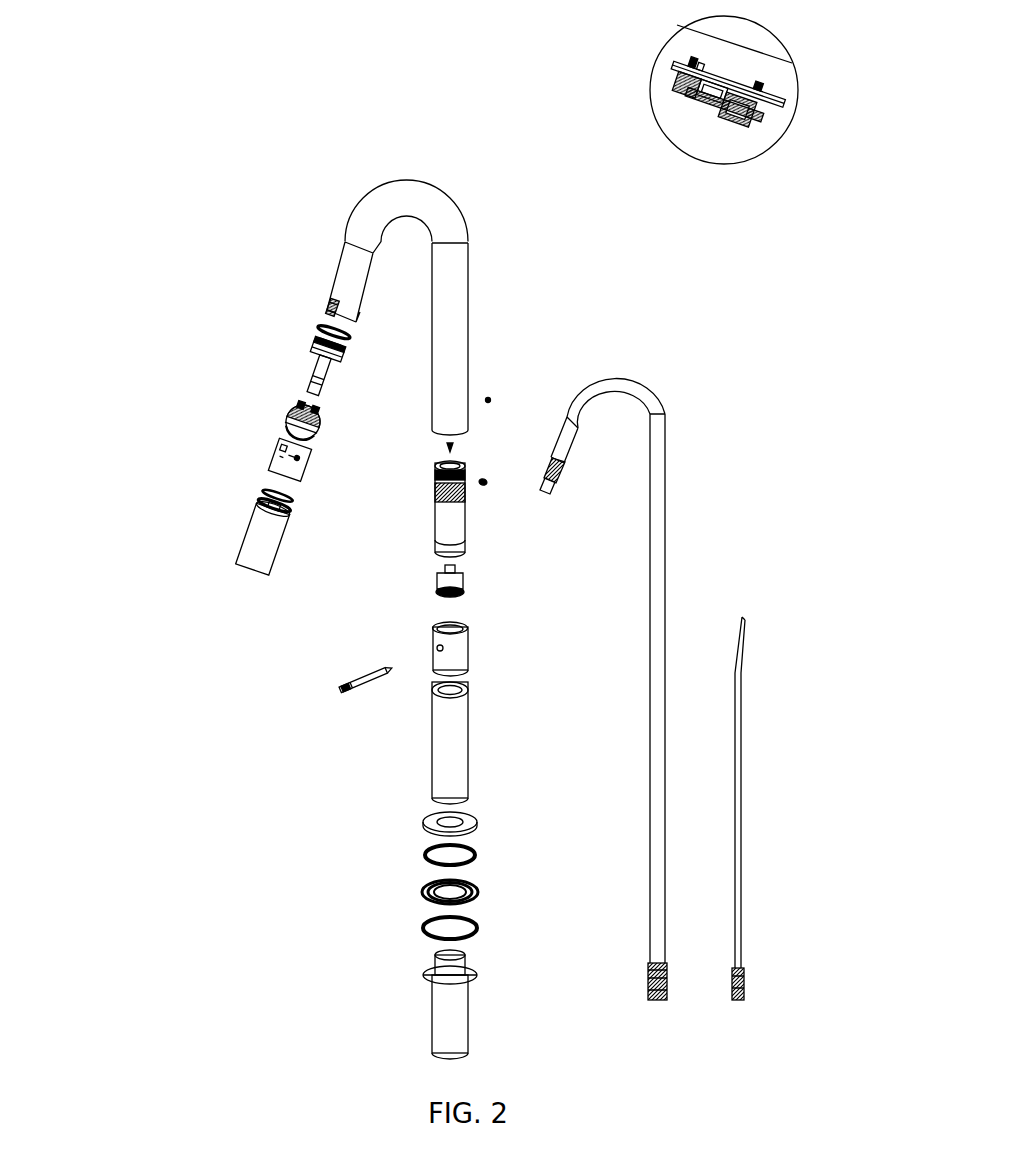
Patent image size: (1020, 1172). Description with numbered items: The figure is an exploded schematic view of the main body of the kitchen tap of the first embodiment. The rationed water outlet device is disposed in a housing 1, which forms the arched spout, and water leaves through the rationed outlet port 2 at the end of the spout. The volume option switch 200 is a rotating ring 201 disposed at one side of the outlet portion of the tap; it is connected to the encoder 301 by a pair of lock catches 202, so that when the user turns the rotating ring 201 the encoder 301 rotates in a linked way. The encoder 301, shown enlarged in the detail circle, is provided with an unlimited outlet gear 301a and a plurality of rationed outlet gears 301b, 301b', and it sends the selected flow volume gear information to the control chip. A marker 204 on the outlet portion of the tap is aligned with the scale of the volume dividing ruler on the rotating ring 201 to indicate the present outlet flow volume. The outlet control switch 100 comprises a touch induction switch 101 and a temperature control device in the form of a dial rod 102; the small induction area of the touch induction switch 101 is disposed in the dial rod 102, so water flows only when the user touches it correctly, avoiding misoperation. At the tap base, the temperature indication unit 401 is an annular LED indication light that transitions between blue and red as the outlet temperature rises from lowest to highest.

The housing 1 is at (445, 357).
The rationed outlet port 2 is at (237, 565).
The outlet control switch 100 is at (294, 641).
The touch induction switch 101 is at (460, 592).
The dial rod 102 is at (340, 687).
The volume option switch 200 is at (217, 455).
The rotating ring 201 is at (270, 463).
The lock catches 202 is at (310, 433).
The marker 204 is at (328, 302).
The encoder 301 is at (288, 414).
The unlimited outlet gear 301a is at (673, 88).
The rationed outlet gear 301b is at (708, 164).
The rationed outlet gear 301b' is at (783, 170).
The temperature indication unit 401 is at (427, 890).